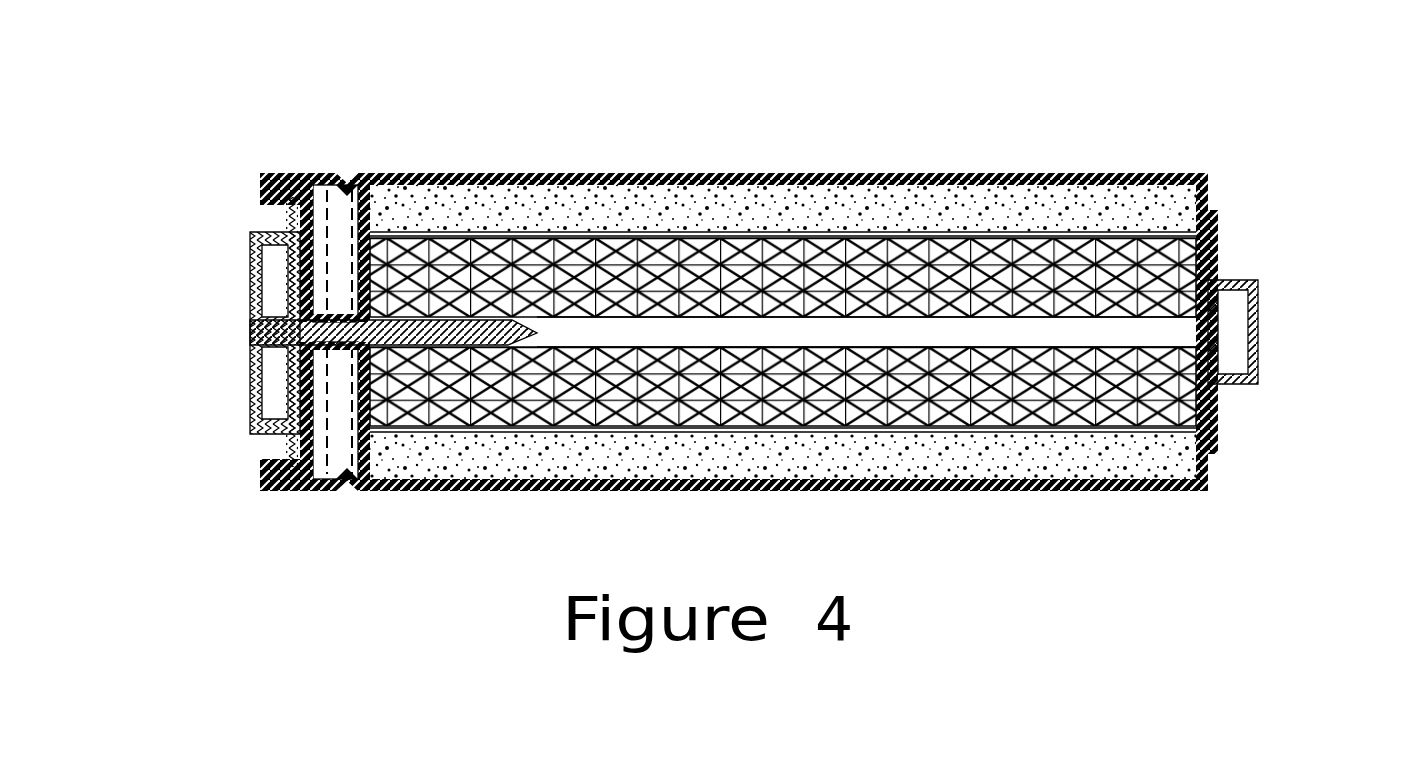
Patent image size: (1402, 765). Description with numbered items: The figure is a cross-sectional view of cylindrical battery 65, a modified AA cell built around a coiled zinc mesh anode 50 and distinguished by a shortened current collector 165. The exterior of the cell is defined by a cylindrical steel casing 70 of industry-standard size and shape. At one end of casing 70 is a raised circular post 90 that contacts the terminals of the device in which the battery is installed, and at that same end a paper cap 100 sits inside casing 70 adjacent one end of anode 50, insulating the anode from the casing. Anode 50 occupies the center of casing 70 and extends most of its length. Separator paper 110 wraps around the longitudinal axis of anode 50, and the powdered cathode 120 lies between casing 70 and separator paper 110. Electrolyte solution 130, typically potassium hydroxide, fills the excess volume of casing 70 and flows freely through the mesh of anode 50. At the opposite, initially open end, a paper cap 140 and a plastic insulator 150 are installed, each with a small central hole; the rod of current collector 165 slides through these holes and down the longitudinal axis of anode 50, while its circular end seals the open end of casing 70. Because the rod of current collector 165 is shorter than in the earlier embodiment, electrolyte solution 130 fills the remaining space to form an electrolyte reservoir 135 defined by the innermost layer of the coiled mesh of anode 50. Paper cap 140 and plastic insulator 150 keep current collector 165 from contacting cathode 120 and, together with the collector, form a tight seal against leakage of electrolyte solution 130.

The anode 50 is at (783, 253).
The cylindrical battery 65 is at (793, 306).
The casing 70 is at (717, 173).
The circular post 90 is at (1260, 335).
The paper cap 100 is at (1212, 310).
The separator paper 110 is at (877, 233).
The cathode 120 is at (793, 215).
The electrolyte solution 130 is at (1065, 250).
The electrolyte reservoir 135 is at (745, 335).
The paper cap 140 is at (382, 177).
The plastic insulator 150 is at (303, 177).
The current collector 165 is at (250, 330).